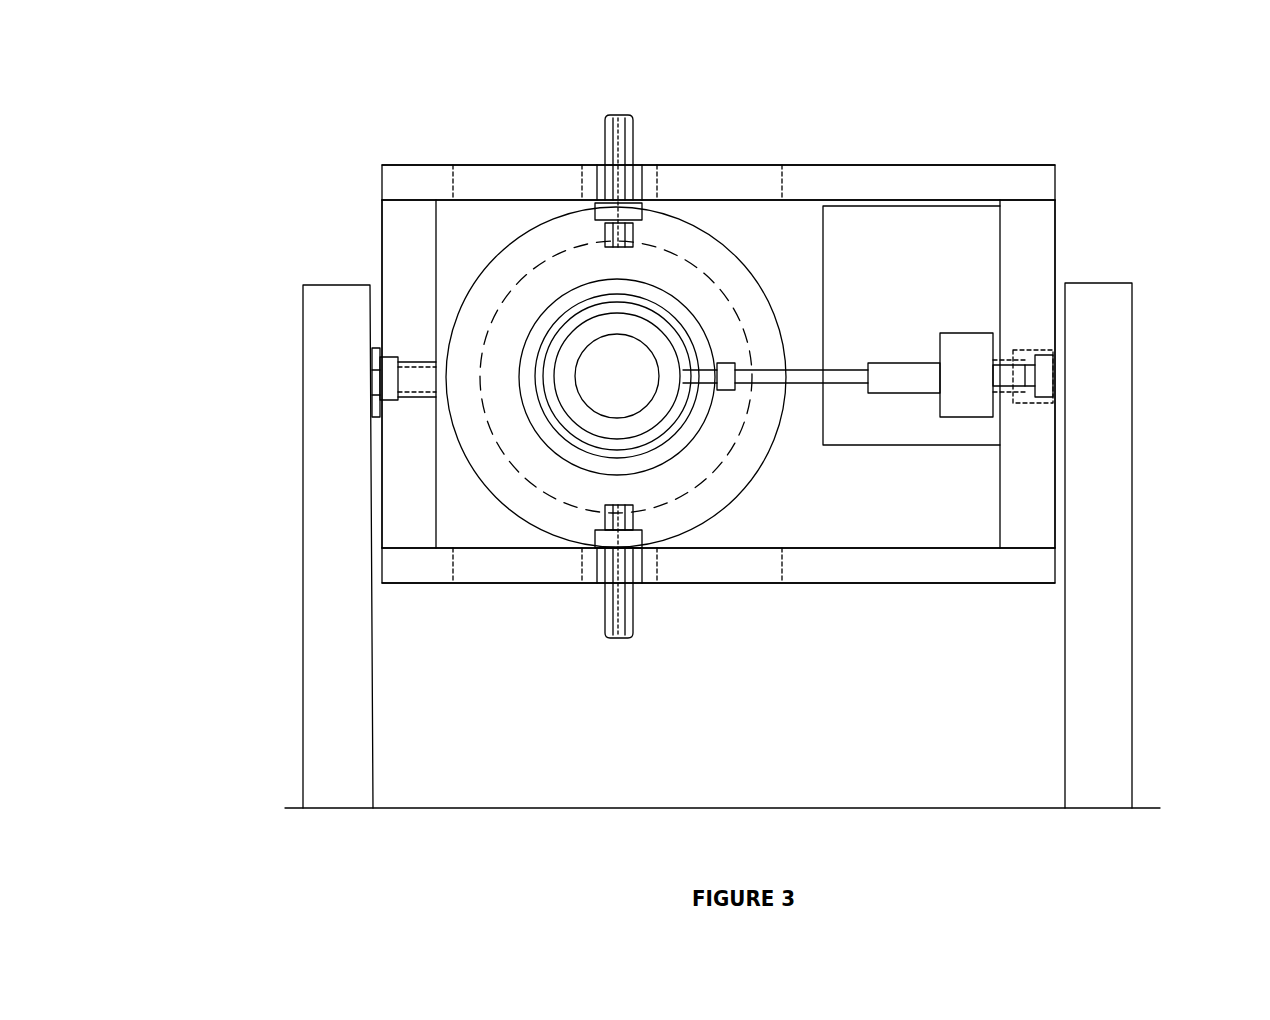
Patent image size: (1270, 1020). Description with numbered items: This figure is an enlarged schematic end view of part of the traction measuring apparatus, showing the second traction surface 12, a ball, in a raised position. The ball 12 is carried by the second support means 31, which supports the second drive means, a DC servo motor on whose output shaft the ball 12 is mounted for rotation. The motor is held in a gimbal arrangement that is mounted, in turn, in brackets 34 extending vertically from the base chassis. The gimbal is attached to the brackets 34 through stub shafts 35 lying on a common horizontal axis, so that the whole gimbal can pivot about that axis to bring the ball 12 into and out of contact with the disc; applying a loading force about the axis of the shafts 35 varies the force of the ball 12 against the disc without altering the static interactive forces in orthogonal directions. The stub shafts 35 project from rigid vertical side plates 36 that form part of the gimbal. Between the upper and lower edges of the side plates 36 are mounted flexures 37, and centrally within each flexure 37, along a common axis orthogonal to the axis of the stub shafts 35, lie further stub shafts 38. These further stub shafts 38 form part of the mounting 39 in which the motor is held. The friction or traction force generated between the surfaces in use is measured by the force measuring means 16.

The second traction surface 12 is at (600, 365).
The force measuring means 16 is at (968, 348).
The second support means 31 is at (427, 133).
The brackets 34 is at (328, 563).
The stub shafts 35 is at (372, 340).
The side plates 36 is at (407, 468).
The flexures 37 is at (703, 173).
The further stub shafts 38 is at (627, 108).
The mounting 39 is at (720, 253).